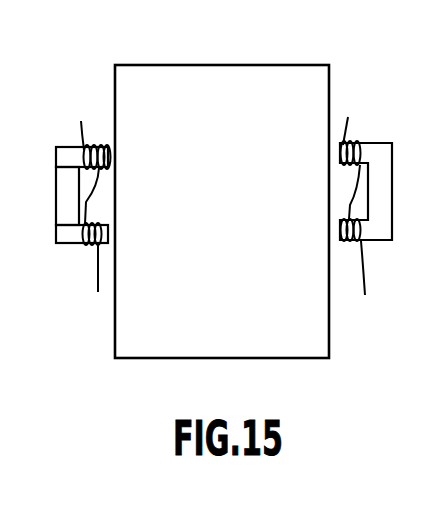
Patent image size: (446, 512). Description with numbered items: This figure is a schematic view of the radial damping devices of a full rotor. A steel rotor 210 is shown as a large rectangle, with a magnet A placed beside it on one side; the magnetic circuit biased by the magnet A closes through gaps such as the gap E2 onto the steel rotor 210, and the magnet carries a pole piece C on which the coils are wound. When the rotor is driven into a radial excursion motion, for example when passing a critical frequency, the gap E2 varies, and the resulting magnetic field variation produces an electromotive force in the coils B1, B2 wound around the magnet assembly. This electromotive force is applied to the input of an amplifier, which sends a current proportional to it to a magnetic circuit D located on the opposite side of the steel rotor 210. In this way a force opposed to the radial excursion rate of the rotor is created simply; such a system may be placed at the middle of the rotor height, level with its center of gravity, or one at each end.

The steel rotor 210 is at (231, 272).
The magnet A is at (61, 185).
The magnet pole piece (top bar) C is at (62, 158).
The coil B1 is at (97, 142).
The coil B2 is at (87, 230).
The gap E2 is at (111, 153).
The magnetic circuit D is at (377, 206).